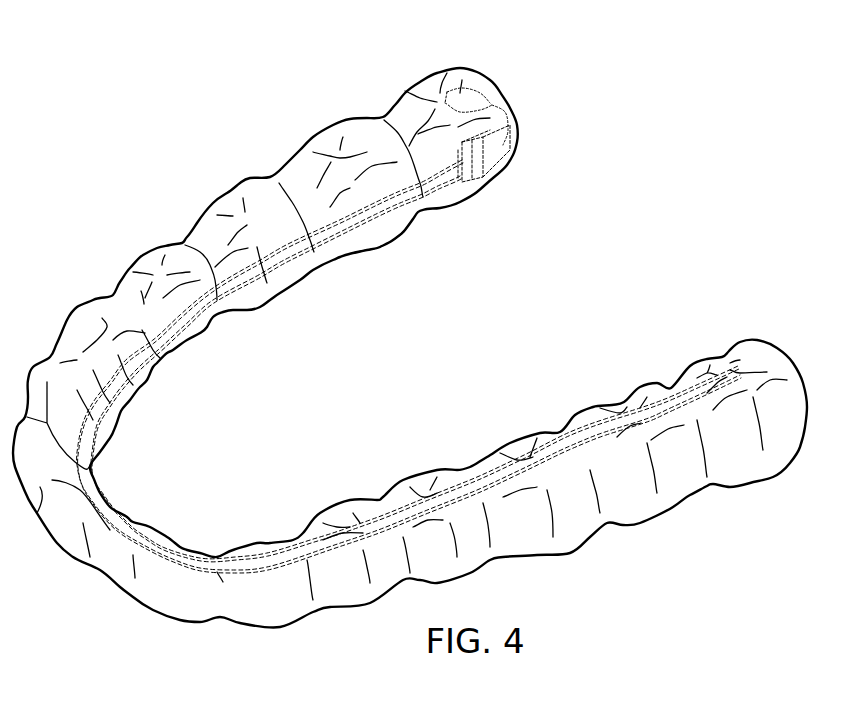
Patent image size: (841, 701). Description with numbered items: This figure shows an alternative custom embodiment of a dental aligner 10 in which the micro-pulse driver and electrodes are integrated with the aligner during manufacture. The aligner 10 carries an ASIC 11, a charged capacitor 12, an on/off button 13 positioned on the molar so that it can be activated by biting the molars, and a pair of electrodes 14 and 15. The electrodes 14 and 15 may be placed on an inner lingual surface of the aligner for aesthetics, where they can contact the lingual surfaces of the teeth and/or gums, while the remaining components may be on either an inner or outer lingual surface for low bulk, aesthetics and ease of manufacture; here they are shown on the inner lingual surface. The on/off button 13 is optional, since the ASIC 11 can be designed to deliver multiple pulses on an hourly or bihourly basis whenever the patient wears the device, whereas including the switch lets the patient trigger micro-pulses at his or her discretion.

The aligner 10 is at (182, 173).
The ASIC 11 is at (480, 178).
The charged capacitor 12 is at (519, 160).
The on/off button 13 is at (468, 82).
The electrode 14 is at (387, 231).
The electrode 15 is at (367, 254).